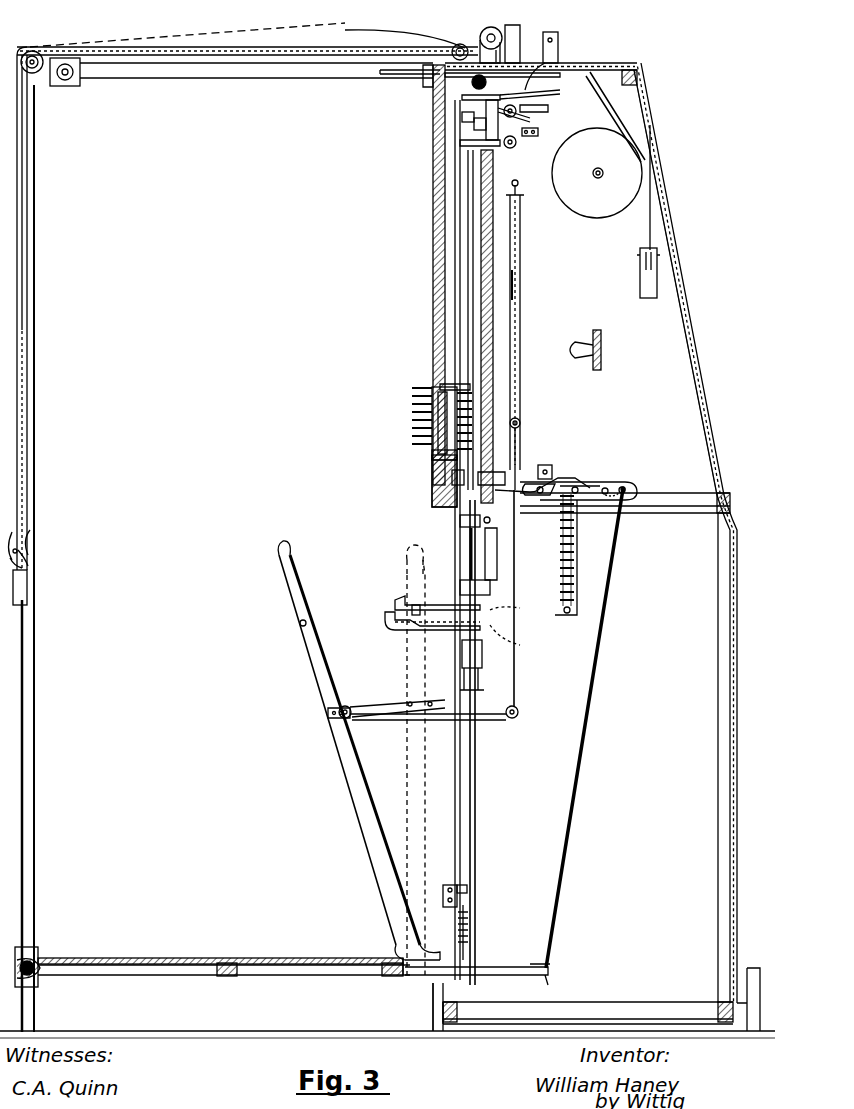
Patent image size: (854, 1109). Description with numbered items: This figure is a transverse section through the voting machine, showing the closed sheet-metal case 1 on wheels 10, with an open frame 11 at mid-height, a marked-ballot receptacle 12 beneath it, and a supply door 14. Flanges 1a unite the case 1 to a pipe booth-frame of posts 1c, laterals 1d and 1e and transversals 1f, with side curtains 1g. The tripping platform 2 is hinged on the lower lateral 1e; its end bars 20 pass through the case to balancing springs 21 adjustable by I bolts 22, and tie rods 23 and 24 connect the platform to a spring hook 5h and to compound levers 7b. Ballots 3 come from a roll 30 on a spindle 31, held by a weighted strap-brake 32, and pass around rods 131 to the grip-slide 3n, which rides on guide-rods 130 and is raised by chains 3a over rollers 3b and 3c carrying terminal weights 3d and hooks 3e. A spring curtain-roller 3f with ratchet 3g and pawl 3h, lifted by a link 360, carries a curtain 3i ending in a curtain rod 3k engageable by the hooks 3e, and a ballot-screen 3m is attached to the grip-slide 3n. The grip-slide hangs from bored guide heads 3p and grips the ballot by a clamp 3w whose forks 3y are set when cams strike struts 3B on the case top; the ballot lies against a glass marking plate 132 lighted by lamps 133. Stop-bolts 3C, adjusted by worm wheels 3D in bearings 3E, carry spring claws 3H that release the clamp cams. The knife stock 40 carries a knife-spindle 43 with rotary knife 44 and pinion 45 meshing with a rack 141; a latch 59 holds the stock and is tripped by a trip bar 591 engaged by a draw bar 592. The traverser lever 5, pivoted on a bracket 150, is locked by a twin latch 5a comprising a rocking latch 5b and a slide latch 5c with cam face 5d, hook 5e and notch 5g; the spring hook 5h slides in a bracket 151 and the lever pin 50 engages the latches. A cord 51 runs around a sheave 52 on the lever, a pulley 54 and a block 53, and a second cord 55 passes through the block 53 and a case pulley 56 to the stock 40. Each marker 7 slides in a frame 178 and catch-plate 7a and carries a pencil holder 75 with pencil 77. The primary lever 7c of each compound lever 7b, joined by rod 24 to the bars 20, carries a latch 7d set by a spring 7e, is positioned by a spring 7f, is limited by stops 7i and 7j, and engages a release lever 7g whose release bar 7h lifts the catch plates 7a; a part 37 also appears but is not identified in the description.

The case 1 is at (387, 542).
The flanges 1a is at (423, 70).
The posts 1c is at (30, 258).
The laterals 1d is at (66, 82).
The lower frame lateral 1e is at (30, 975).
The transversals 1f is at (275, 72).
The side curtains 1g is at (230, 386).
The tripping platform 2 is at (265, 958).
The ballots 3 is at (455, 316).
The chains 3a is at (210, 60).
The roller 3b is at (450, 52).
The roller 3c is at (36, 50).
The terminal weights 3d is at (20, 590).
The hooks 3e is at (28, 535).
The spring curtain-roller 3f is at (510, 30).
The ratchet 3g is at (478, 28).
The pawl 3h is at (502, 30).
The curtain 3i is at (270, 30).
The curtain rod 3k is at (22, 560).
The ballot-screen 3m is at (478, 45).
The grip-slide 3n is at (465, 126).
The bored guide heads 3p is at (470, 105).
The clamp 3w is at (515, 120).
The forks 3y is at (470, 136).
The struts 3B is at (462, 116).
The stop-bolts 3C is at (475, 560).
The worm wheels 3D is at (460, 520).
The bearings 3E is at (491, 540).
The spring claws 3H is at (497, 478).
The lever 5 is at (352, 792).
The twin latch 5a is at (390, 615).
The rocking latch 5b is at (418, 600).
The slide latch 5c is at (395, 632).
The cam face 5d is at (515, 638).
The hook 5e is at (510, 612).
The notch 5g is at (395, 605).
The spring hook 5h is at (478, 595).
The marker 7 is at (432, 405).
The catch-plate 7a is at (435, 440).
The compound levers 7b is at (575, 485).
The primary lever 7c is at (600, 488).
The latch 7d is at (545, 465).
The spring 7e is at (598, 487).
The spring 7f is at (580, 575).
The release lever 7g is at (515, 490).
The release bar 7h is at (440, 482).
The stop 7i is at (555, 478).
The stop 7j is at (612, 488).
The wheels 10 is at (425, 1005).
The open frame 11 is at (625, 492).
The marked-ballot receptacle 12 is at (591, 728).
The supply door 14 is at (672, 222).
The platform arm 20 is at (515, 978).
The balancing springs 21 is at (470, 945).
The I bolts 22 is at (470, 905).
The tie rod 23 is at (476, 838).
The tie rod 24 is at (555, 840).
The roll 30 is at (597, 173).
The spindle 31 is at (603, 176).
The weighted strap-brake 32 is at (648, 232).
The pin 37 is at (520, 150).
The knife stock 40 is at (590, 135).
The knife-spindle 43 is at (500, 130).
The rotary knife 44 is at (484, 172).
The pinion 45 is at (470, 140).
The pin 50 is at (300, 622).
The cord 51 is at (520, 700).
The sheave 52 is at (375, 705).
The block 53 is at (520, 420).
The pulley 54 is at (520, 715).
The second cord 55 is at (522, 245).
The case pulley 56 is at (540, 134).
The latch 59 is at (510, 56).
The pencil holder 75 is at (450, 385).
The pencil 77 is at (468, 388).
The guide-rods 130 is at (462, 232).
The rods 131 is at (510, 100).
The glass marking plate 132 is at (510, 285).
The lamp 133 is at (585, 325).
The rack 141 is at (548, 110).
The bracket 150 is at (410, 952).
The bracket 151 is at (476, 655).
The frame 178 is at (418, 390).
The link 360 is at (548, 32).
The trip bar 591 is at (545, 60).
The draw bar 592 is at (460, 82).